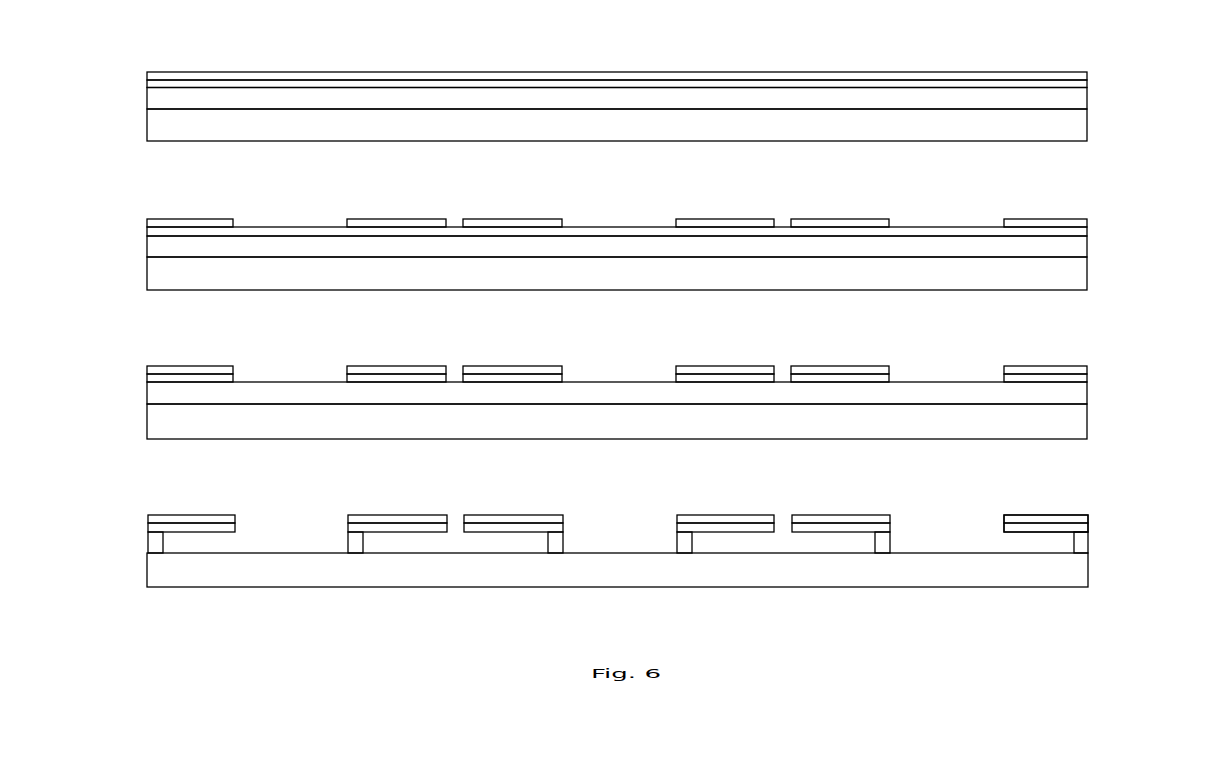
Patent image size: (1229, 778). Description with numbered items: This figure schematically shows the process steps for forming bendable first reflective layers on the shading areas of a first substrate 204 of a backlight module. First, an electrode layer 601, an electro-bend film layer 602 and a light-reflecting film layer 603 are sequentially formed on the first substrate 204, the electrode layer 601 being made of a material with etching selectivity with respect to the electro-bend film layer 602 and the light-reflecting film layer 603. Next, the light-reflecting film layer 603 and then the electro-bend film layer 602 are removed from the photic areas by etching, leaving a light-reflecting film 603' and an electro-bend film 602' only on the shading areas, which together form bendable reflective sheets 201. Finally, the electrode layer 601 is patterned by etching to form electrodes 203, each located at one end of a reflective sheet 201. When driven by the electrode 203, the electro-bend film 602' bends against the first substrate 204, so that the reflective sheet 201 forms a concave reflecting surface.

The first substrate 204 is at (655, 348).
The electrode layer 601 is at (655, 241).
The electro-bend film layer 602 is at (655, 148).
The light-reflecting film layer 603 is at (655, 58).
The light-reflecting film 603' is at (657, 354).
The electro-bend film 602' is at (657, 444).
The electrode 203 is at (656, 536).
The reflective sheet 201 is at (1172, 484).